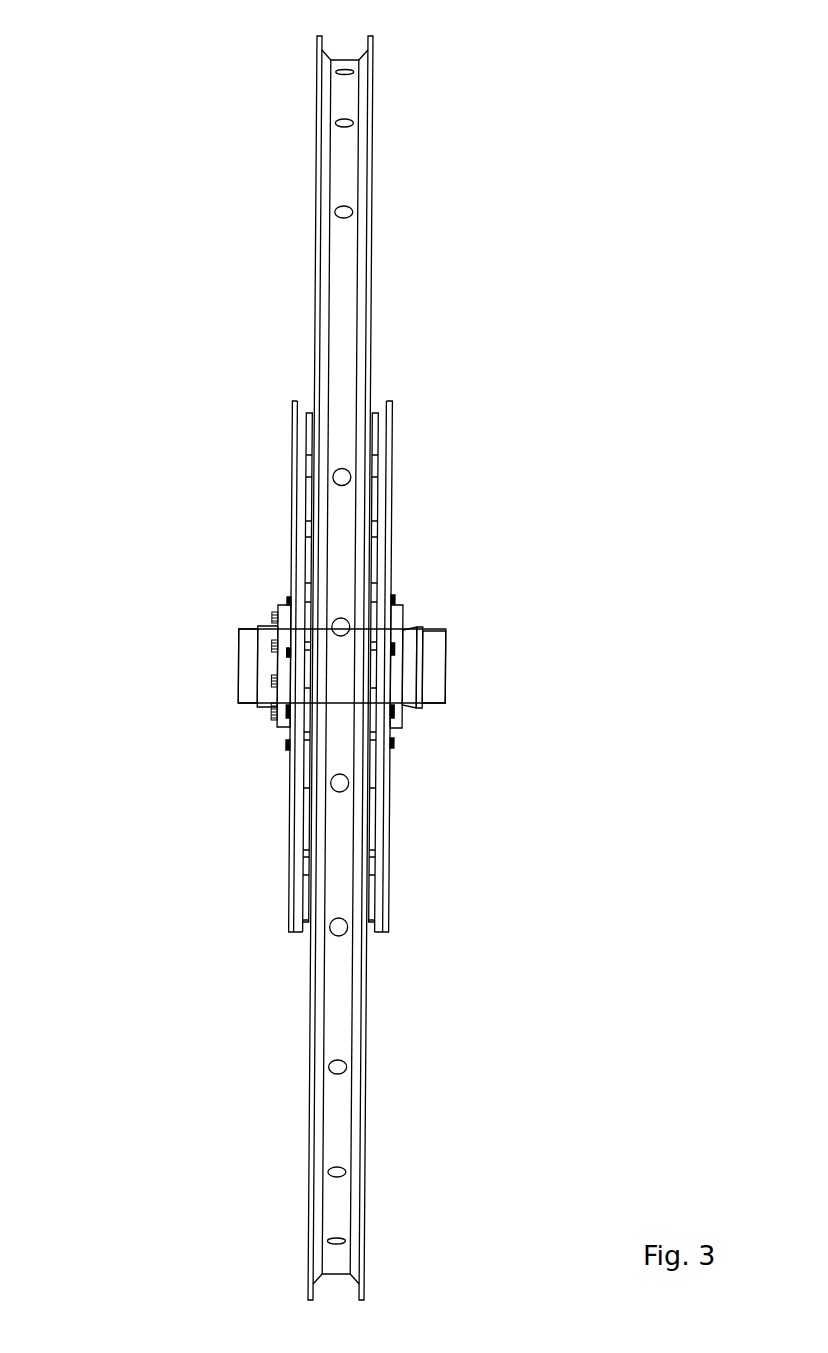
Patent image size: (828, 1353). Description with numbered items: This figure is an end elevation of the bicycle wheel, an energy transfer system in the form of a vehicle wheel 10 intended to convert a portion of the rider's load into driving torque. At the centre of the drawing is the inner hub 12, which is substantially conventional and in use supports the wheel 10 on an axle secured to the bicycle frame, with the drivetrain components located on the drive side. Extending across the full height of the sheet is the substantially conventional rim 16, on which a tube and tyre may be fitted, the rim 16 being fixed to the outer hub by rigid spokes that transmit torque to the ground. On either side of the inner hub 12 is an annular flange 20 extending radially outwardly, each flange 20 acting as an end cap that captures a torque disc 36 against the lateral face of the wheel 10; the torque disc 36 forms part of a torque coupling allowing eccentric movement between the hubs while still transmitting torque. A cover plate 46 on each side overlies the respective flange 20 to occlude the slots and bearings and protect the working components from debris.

The vehicle wheel 10 is at (132, 146).
The inner hub 12 is at (447, 662).
The rim 16 is at (373, 80).
The annular flange 20 is at (378, 894).
The torque disc 36 is at (372, 770).
The cover plate 46 is at (389, 837).